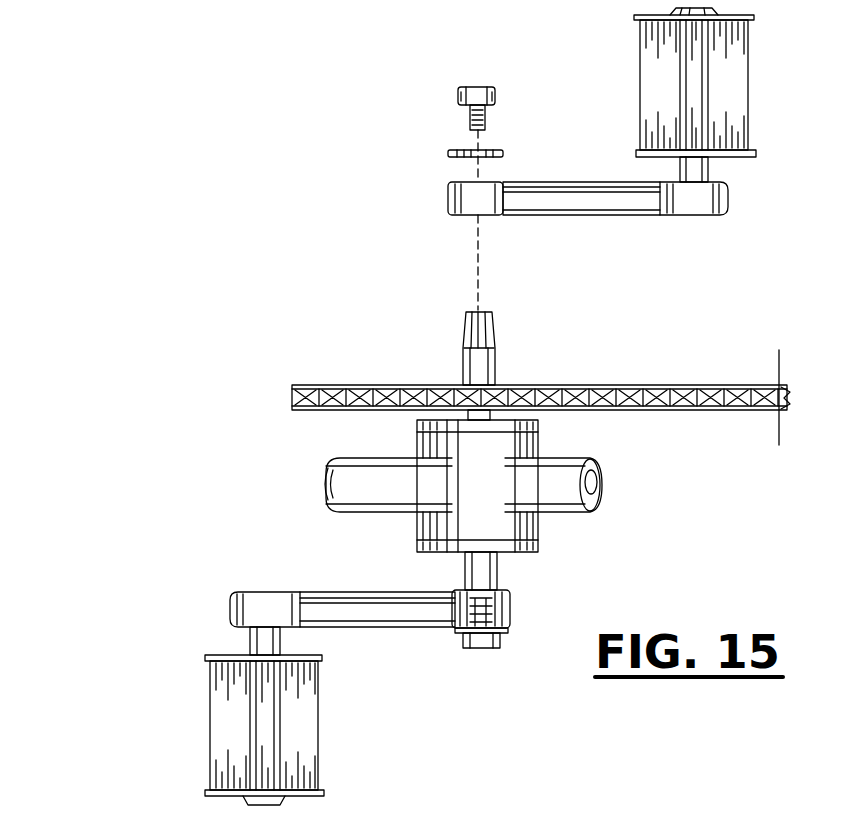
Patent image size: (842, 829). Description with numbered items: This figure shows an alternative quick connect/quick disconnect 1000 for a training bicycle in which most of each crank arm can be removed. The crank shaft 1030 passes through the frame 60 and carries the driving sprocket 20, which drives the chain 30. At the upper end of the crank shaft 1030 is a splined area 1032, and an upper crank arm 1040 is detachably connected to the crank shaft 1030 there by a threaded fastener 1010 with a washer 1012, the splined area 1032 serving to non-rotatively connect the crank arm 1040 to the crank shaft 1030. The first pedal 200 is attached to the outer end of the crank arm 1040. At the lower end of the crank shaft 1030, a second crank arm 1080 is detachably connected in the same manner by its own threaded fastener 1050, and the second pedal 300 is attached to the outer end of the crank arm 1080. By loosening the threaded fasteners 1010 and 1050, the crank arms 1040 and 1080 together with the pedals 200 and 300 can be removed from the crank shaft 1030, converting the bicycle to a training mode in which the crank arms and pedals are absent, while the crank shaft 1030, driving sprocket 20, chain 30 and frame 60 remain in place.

The quick connect/quick disconnect 1000 is at (178, 145).
The threaded fastener 1010 is at (470, 88).
The washer 1012 is at (452, 153).
The crank arm 1040 is at (572, 205).
The first pedal 200 is at (735, 80).
The splined area 1032 is at (486, 322).
The crank shaft 1030 is at (486, 376).
The driving sprocket 20 is at (342, 385).
The chain 30 is at (712, 384).
The frame 60 is at (596, 492).
The threaded fastener 1050 is at (482, 650).
The crank arm 1080 is at (407, 612).
The second pedal 300 is at (232, 706).